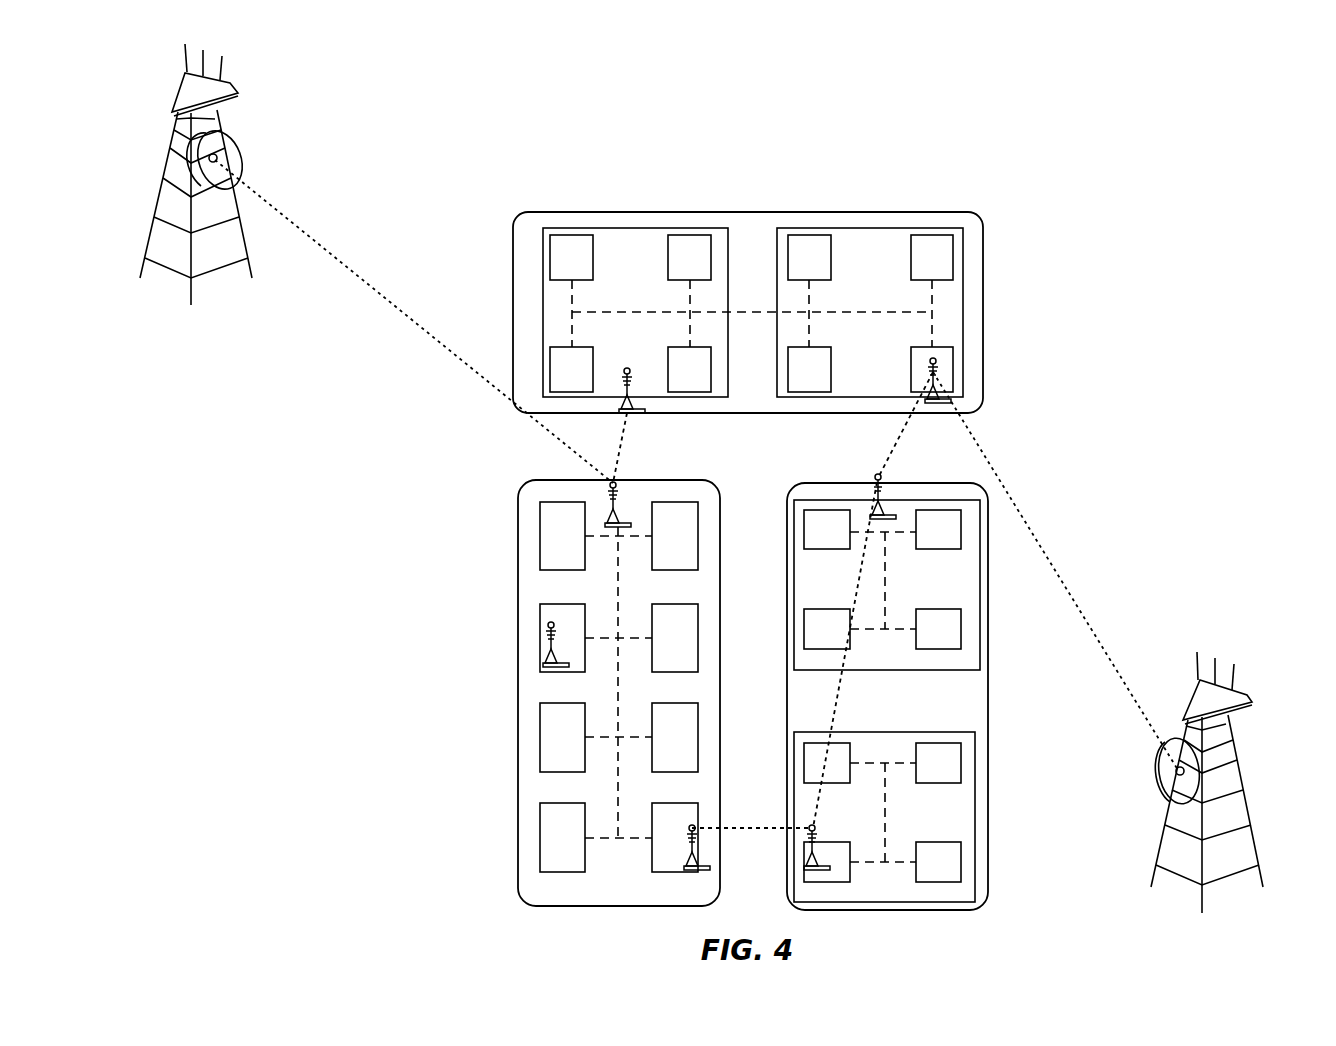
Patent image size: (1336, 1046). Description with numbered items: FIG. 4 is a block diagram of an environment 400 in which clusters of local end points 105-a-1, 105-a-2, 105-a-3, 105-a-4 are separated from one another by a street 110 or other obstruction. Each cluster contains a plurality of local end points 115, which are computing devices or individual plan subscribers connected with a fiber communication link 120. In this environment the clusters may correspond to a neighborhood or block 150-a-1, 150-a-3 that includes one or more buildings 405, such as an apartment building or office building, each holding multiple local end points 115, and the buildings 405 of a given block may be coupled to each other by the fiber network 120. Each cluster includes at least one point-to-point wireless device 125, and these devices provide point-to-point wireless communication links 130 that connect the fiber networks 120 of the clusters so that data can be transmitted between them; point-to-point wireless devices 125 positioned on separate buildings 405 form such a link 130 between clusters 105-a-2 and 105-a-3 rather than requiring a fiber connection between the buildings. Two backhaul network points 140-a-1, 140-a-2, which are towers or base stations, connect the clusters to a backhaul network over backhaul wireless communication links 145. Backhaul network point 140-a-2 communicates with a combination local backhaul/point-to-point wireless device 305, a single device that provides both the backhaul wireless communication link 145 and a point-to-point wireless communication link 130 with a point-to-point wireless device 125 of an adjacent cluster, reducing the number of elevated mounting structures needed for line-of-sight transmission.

The environment 400 is at (452, 193).
The cluster of local end points 105-a-1 is at (542, 795).
The cluster of local end points 105-a-2 is at (957, 807).
The cluster of local end points 105-a-3 is at (963, 683).
The cluster of local end points 105-a-4 is at (745, 228).
The street 110 is at (742, 466).
The local end point 115 is at (932, 232).
The fiber communication link 120 is at (932, 323).
The point-to-point wireless device 125 is at (645, 412).
The point-to-point wireless communication link 130 is at (893, 445).
The backhaul network point 140-a-1 is at (240, 90).
The backhaul network point 140-a-2 is at (1200, 682).
The backhaul wireless communication link 145 is at (360, 279).
The neighborhood or block 150-a-1 is at (518, 550).
The neighborhood or block 150-a-3 is at (983, 247).
The combination local backhaul/point-to-point wireless device 305 is at (933, 372).
The building 405 is at (862, 228).